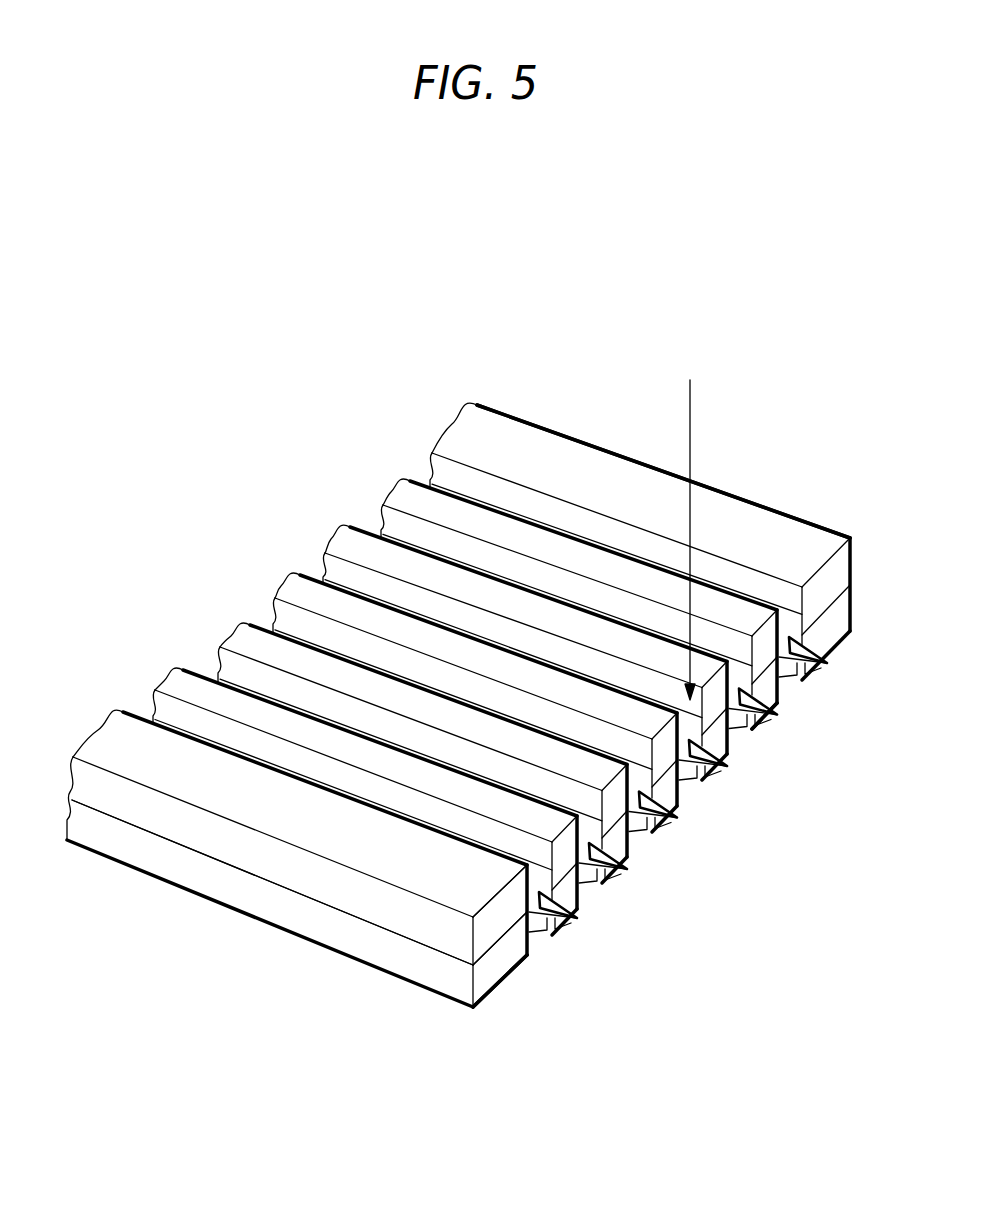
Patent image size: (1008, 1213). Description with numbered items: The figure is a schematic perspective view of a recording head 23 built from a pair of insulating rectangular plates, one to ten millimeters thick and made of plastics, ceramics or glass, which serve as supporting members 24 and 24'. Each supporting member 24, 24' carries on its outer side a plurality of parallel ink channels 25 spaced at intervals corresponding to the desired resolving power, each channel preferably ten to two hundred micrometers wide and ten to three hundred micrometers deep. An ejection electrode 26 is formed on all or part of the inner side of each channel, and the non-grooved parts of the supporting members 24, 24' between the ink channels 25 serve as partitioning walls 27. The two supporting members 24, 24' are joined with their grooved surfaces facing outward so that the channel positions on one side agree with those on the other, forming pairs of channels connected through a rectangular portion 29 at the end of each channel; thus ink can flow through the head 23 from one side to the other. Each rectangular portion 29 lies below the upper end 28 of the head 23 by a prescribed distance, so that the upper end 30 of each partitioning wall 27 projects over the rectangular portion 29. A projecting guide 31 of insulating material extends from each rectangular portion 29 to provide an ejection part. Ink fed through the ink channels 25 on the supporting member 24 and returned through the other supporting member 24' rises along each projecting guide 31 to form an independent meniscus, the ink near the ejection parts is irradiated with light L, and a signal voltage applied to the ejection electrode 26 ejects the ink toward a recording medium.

The head 23 is at (547, 385).
The supporting member 24 is at (297, 840).
The supporting member 24' is at (297, 910).
The ink channel 25 is at (390, 525).
The ejection electrode 26 is at (178, 712).
The partitioning wall 27 is at (568, 553).
The upper end 28 is at (502, 958).
The rectangular portion 29 is at (787, 630).
The upper end 30 is at (670, 795).
The projecting guide 31 is at (782, 705).
The light L is at (689, 520).